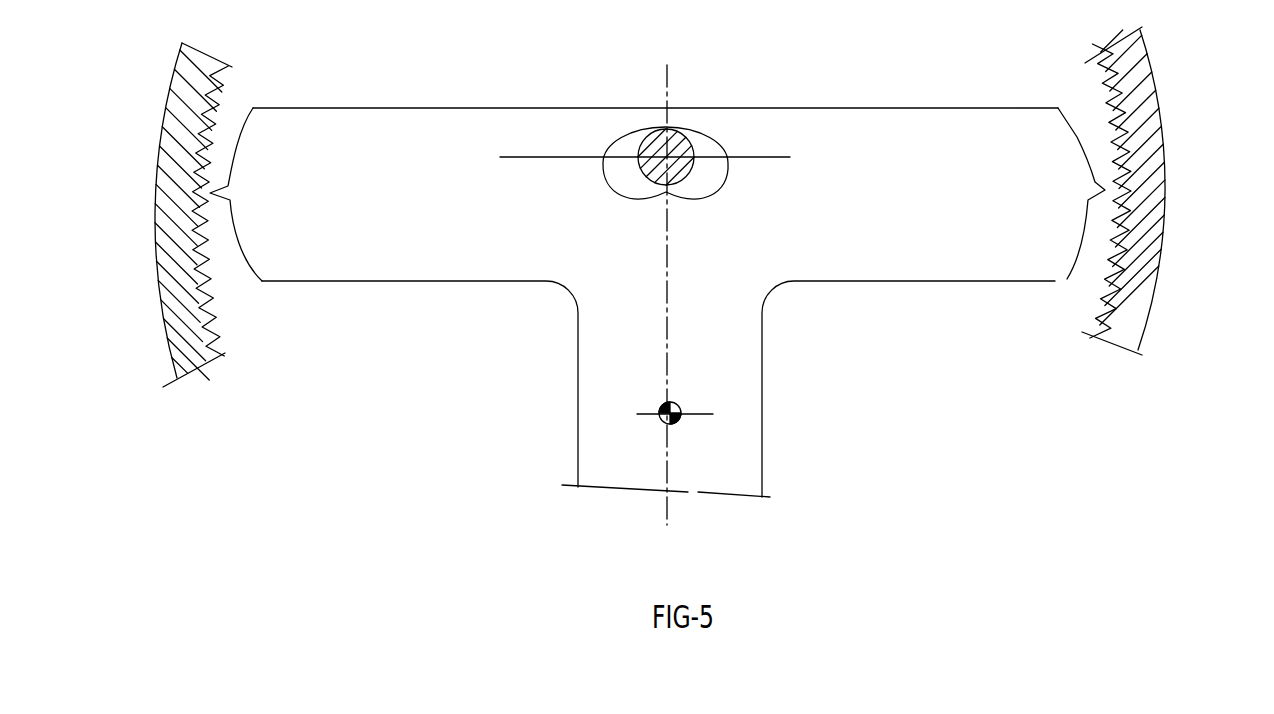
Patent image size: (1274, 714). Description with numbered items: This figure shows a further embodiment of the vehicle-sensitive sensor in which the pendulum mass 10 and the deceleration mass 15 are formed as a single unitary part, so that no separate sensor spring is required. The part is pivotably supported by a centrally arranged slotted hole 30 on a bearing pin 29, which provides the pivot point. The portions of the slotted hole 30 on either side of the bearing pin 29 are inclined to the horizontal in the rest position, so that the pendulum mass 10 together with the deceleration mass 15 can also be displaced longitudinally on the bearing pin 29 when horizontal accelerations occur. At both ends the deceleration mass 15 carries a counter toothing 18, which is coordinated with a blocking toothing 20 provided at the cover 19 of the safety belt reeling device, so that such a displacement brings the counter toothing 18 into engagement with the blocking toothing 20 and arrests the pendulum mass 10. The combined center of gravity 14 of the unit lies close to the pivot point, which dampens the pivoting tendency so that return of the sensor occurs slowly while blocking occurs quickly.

The pendulum mass 10 is at (728, 407).
The center of gravity 14 is at (660, 417).
The deceleration mass 15 is at (897, 180).
The counter toothing 18 is at (1085, 170).
The cover 19 is at (1145, 113).
The blocking toothing 20 is at (1125, 168).
The bearing pin 29 is at (687, 132).
The slotted hole 30 is at (718, 147).